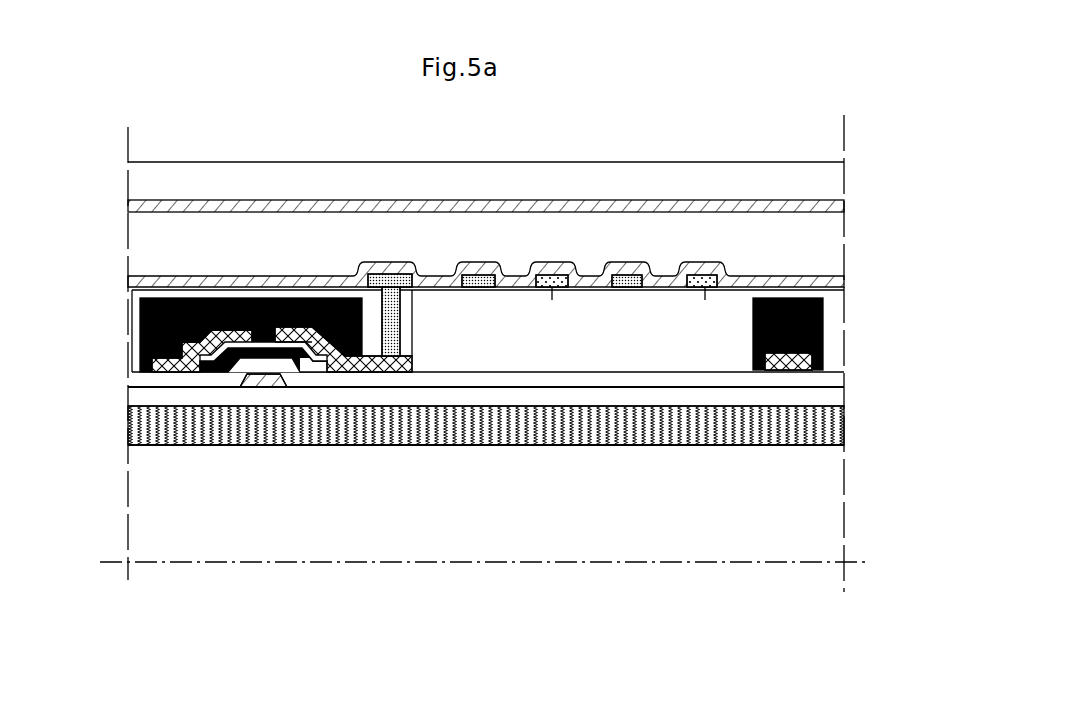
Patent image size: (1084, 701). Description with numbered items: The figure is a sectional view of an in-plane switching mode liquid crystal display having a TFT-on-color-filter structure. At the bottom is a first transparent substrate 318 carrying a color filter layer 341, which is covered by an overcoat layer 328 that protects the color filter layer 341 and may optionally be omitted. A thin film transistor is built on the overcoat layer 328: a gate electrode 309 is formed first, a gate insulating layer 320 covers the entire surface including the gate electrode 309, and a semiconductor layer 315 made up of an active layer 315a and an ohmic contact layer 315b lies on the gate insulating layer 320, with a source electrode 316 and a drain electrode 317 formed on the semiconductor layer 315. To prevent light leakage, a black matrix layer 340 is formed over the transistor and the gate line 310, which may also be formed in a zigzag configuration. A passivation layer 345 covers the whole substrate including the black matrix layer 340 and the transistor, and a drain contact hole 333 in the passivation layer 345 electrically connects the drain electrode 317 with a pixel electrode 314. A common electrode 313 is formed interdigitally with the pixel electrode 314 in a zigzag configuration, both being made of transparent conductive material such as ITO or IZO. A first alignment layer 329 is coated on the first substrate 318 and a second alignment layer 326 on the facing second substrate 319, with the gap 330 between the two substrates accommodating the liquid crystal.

The gate electrode 309 is at (268, 388).
The gate line 310 is at (790, 362).
The common electrode 313 is at (552, 289).
The pixel electrode 314 is at (399, 280).
The semiconductor layer 315 is at (240, 487).
The active layer 315a is at (218, 368).
The ohmic contact layer 315b is at (200, 363).
The source electrode 316 is at (153, 381).
The drain electrode 317 is at (374, 373).
The first transparent substrate 318 is at (830, 517).
The second substrate 319 is at (830, 172).
The gate insulating layer 320 is at (465, 379).
The second alignment layer 326 is at (828, 212).
The overcoat layer 328 is at (826, 398).
The first alignment layer 329 is at (836, 283).
The gap 330 is at (830, 235).
The drain contact hole 333 is at (394, 259).
The black matrix layer 340 is at (140, 320).
The color filter layer 341 is at (836, 432).
The passivation layer 345 is at (826, 301).